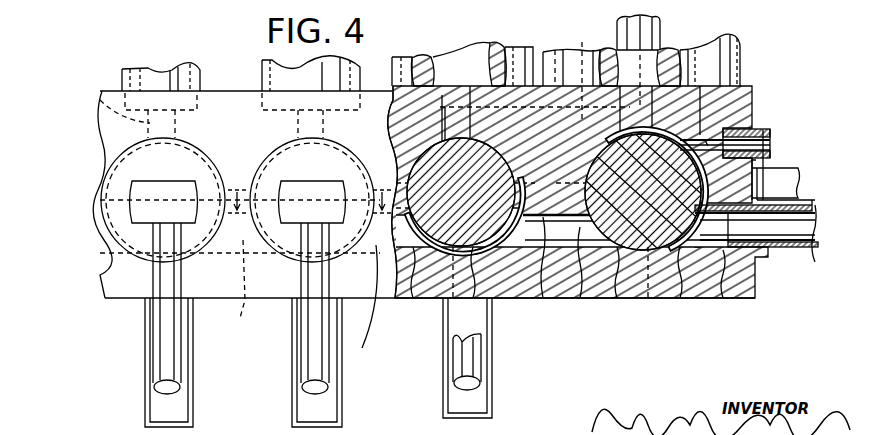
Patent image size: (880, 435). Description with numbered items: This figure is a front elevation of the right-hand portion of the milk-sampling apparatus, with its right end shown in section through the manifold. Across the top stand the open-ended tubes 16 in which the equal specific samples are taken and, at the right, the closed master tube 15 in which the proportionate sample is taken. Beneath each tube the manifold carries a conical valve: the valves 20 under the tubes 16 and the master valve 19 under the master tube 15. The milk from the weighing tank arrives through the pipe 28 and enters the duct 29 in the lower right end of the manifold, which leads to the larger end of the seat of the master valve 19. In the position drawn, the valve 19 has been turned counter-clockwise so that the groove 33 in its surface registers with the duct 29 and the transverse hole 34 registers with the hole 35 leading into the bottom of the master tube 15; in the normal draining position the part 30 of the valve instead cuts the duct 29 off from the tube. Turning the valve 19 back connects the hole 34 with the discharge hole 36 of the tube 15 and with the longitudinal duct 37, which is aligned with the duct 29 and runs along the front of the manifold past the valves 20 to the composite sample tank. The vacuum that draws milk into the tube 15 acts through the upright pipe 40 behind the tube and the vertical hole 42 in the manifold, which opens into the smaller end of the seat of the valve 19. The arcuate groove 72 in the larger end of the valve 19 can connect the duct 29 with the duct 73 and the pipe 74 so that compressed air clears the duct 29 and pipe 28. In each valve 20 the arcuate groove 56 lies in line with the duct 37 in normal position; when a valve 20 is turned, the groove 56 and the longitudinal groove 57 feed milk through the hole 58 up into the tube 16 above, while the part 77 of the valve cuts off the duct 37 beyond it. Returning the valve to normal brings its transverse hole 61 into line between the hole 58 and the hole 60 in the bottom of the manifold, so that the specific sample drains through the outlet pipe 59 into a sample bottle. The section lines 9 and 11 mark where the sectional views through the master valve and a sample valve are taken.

The section line 9— 9 is at (555, 195).
The section line 11— 11 is at (312, 191).
The master tube 15 is at (738, 36).
The tubes 16 is at (198, 69).
The master valve 19 is at (617, 298).
The valves 20 is at (282, 169).
The pipe 28 is at (815, 258).
The duct 29 is at (725, 292).
The part of the valve 30 is at (770, 170).
The groove 33 is at (681, 298).
The hole 34 is at (648, 298).
The hole 35 is at (571, 71).
The discharge hole 36 is at (752, 98).
The duct 37 is at (580, 300).
The upright pipe 40 is at (655, 25).
The vertical hole 42 is at (640, 67).
The arcuate groove 56 is at (413, 300).
The groove 57 is at (545, 300).
The hole 58 is at (297, 122).
The outlet pipe 59 is at (104, 96).
The hole 60 is at (497, 302).
The transverse hole 61 is at (430, 57).
The arcuate groove 72 is at (752, 112).
The duct 73 is at (770, 130).
The pipe 74 is at (771, 153).
The part of the valve 77 is at (368, 308).